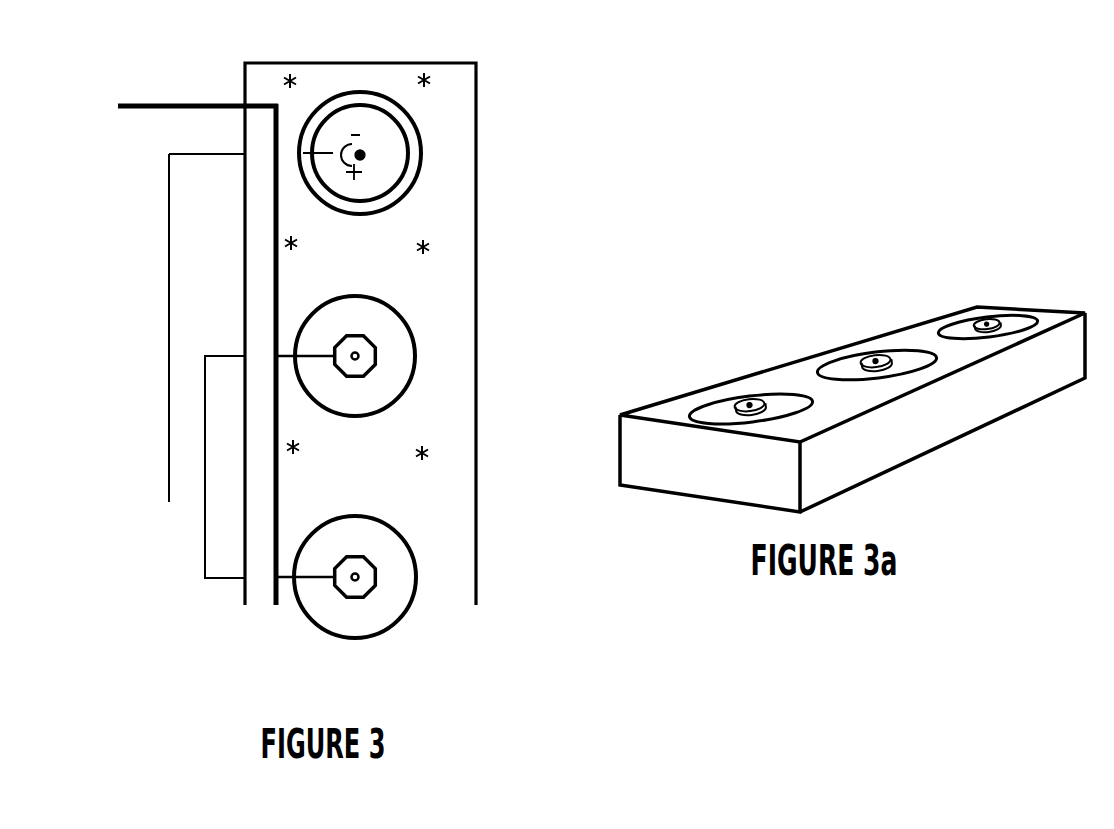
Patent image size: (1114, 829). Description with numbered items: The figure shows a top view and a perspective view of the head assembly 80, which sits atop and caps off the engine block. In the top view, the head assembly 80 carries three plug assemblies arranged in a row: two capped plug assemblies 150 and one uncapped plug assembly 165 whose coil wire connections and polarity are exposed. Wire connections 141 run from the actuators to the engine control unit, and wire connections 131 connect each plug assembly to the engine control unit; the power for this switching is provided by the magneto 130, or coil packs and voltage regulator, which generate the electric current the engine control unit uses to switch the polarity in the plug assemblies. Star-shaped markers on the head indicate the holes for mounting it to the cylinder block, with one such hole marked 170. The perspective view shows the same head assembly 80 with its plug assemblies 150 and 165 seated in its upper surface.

In FIG. 3, the head assembly 80 is at (355, 78).
In FIG. 3A, the head assembly 80 is at (635, 445).
In FIG. 3, the magneto 130 is at (278, 375).
In FIG. 3, the wire connections 131 is at (171, 106).
In FIG. 3, the wire connections 141 is at (205, 390).
In FIG. 3, the capped plug assembly 150 is at (370, 547).
In FIG. 3A, the capped plug assembly 150 is at (715, 408).
In FIG. 3, the uncapped plug assembly 165 is at (388, 150).
In FIG. 3A, the uncapped plug assembly 165 is at (1022, 320).
In FIG. 3, the mounting hole marker 170 is at (286, 241).